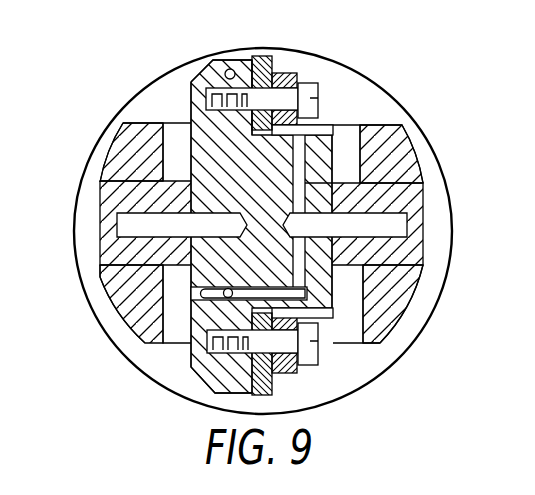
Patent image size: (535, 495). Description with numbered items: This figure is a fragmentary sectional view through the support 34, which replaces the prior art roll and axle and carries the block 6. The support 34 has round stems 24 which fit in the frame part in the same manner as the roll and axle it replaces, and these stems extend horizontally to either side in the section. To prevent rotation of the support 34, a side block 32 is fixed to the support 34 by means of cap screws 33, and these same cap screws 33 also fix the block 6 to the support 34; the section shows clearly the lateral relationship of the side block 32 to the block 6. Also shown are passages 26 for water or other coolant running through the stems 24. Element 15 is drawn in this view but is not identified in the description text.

The block 6 is at (275, 70).
The post 15 is at (262, 55).
The round stems 24 is at (100, 192).
The passages 26 is at (143, 233).
The side block 32 is at (298, 72).
The cap screws 33 is at (317, 97).
The support 34 is at (394, 112).